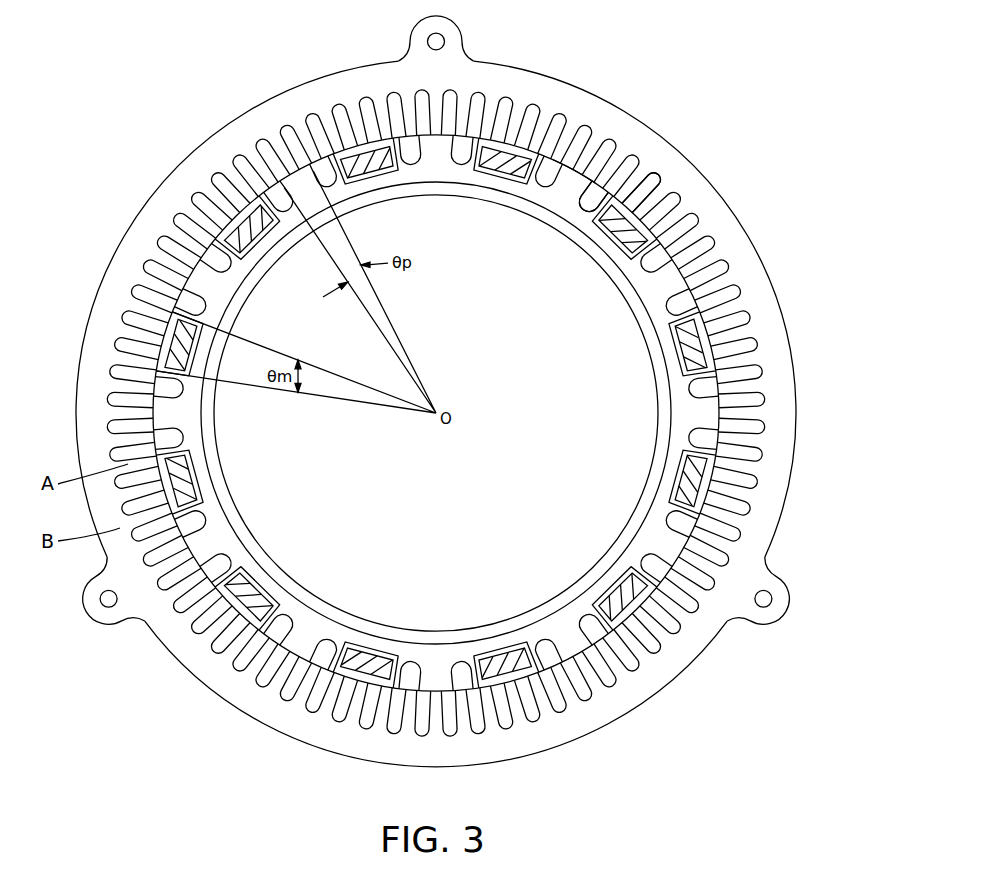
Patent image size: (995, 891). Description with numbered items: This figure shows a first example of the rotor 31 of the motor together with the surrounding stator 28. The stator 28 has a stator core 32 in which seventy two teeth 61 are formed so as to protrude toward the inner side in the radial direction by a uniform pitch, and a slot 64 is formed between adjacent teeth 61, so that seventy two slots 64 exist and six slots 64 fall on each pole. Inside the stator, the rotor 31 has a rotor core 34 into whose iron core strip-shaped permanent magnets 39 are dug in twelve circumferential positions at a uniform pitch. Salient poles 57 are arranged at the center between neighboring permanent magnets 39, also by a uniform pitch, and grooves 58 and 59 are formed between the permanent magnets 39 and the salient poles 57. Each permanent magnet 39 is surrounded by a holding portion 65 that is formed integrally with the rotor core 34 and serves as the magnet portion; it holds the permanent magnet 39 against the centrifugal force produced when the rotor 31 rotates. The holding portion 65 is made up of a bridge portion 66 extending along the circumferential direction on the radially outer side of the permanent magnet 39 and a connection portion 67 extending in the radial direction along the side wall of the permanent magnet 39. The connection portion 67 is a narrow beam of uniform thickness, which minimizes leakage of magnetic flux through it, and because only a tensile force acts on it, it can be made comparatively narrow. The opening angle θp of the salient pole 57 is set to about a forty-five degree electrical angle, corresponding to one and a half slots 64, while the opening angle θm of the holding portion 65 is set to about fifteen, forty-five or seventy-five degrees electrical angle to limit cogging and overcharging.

The stator 28 is at (542, 71).
The stator core 32 is at (600, 129).
The teeth 61 is at (650, 197).
The slot 64 is at (660, 215).
The holding portion 65 is at (836, 184).
The bridge portion 66 is at (655, 207).
The connection portion 67 is at (678, 267).
The groove 58 is at (570, 181).
The salient pole 57 is at (590, 186).
The groove 59 is at (607, 203).
The permanent magnet 39 is at (625, 244).
The rotor core 34 is at (643, 273).
The rotor 31 is at (619, 386).